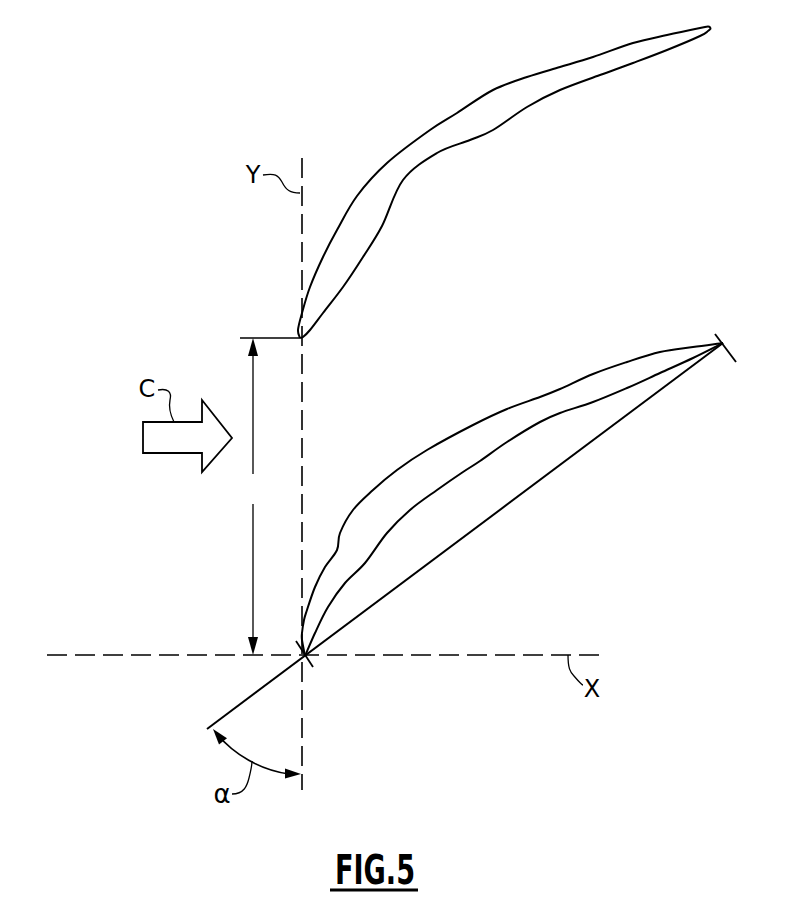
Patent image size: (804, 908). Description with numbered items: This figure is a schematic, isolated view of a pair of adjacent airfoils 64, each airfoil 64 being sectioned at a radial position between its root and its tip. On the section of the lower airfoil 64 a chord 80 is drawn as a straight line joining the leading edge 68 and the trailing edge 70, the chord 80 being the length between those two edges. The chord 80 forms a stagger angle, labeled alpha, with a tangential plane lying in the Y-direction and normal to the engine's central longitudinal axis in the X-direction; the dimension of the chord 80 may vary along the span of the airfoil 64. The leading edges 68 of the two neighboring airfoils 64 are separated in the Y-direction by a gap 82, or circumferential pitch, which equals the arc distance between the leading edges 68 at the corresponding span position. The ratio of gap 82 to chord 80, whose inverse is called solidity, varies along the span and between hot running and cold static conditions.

The airfoil 64 is at (557, 364).
The leading edge 68 is at (307, 668).
The trailing edge 70 is at (731, 332).
The chord 80 is at (480, 530).
The gap 82 is at (267, 496).